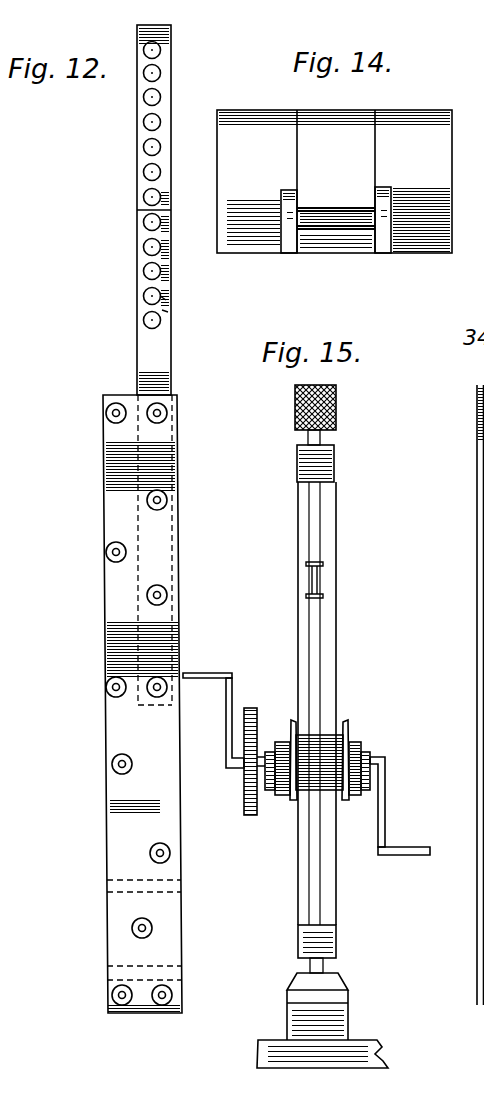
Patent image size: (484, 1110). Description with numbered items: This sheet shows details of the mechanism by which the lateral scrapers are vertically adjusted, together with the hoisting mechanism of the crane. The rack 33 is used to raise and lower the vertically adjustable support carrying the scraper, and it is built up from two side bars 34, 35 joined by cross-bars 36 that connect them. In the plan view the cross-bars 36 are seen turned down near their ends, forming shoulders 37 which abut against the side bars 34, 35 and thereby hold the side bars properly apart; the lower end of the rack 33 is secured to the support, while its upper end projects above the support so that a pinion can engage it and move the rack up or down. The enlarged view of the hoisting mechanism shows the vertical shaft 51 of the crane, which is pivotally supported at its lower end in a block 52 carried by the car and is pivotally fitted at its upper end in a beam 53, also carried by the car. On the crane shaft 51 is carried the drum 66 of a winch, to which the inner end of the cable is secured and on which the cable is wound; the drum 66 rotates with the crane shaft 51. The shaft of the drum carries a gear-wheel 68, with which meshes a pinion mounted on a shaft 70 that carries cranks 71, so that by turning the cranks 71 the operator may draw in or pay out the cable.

In FIG. 12, the rack 33 is at (106, 687).
In FIG. 12, the side bar 34 is at (171, 338).
In FIG. 14, the side bar 34 is at (290, 255).
In FIG. 14, the side bar 35 is at (381, 238).
In FIG. 12, the cross-bar 36 is at (164, 300).
In FIG. 14, the shoulder 37 is at (300, 232).
In FIG. 15, the vertical shaft of crane 51 is at (330, 875).
In FIG. 15, the block 52 is at (342, 988).
In FIG. 15, the beam 53 is at (338, 410).
In FIG. 15, the drum 66 is at (318, 745).
In FIG. 15, the gear-wheel 68 is at (250, 815).
In FIG. 15, the shaft 70 is at (240, 768).
In FIG. 15, the crank 71 is at (412, 848).